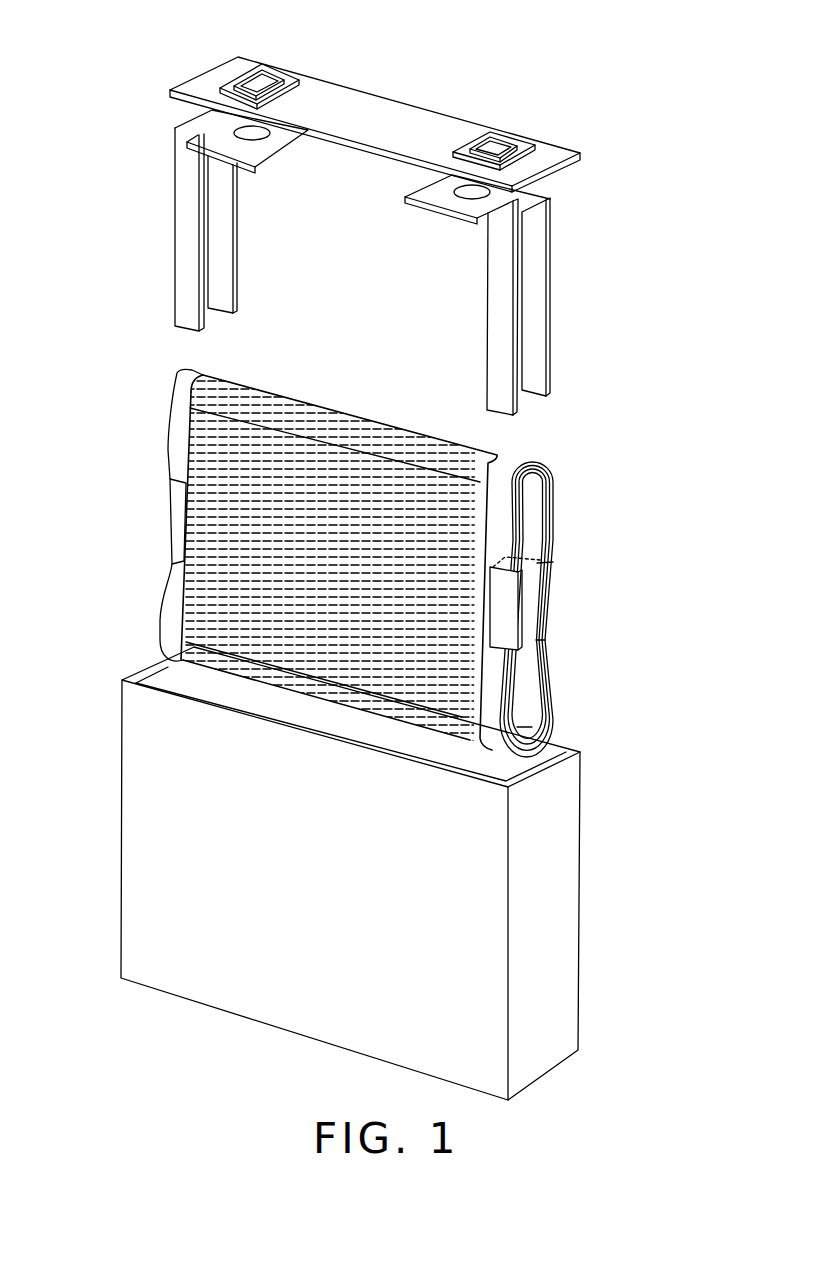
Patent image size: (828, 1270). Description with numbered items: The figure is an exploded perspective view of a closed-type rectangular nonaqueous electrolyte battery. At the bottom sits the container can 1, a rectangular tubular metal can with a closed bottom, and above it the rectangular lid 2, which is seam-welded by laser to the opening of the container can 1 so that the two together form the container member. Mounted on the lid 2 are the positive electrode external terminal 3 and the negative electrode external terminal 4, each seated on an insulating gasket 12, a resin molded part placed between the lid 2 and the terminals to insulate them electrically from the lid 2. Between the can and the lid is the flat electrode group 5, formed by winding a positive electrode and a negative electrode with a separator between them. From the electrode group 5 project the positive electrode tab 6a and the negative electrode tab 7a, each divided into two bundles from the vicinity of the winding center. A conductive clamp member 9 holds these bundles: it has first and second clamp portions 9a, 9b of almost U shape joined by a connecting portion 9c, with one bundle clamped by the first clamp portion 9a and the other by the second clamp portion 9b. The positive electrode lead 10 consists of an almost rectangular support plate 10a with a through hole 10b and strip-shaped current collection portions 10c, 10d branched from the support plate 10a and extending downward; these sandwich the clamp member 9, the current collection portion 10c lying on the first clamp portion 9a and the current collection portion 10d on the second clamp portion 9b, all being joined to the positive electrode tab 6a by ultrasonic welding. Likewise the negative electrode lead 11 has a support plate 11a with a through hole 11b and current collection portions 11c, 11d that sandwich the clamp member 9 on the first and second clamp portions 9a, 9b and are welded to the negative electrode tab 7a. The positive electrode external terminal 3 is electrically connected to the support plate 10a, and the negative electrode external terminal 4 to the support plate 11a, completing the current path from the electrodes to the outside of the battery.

The container can 1 is at (560, 912).
The lid 2 is at (383, 105).
The positive electrode external terminal 3 is at (262, 80).
The negative electrode external terminal 4 is at (497, 145).
The electrode group 5 is at (368, 406).
The positive electrode tab 6a is at (178, 428).
The negative electrode tab 7a is at (502, 511).
The conductive clamp member 9 is at (377, 564).
The first clamp portion 9a is at (503, 632).
The second clamp portion 9b is at (546, 598).
The connecting portion 9c is at (527, 565).
The positive electrode lead 10 is at (216, 220).
The support plate 10a is at (290, 134).
The through hole 10b is at (262, 137).
The current collection portion 10c is at (187, 280).
The current collection portion 10d is at (225, 275).
The negative electrode lead 11 is at (526, 295).
The support plate 11a is at (503, 200).
The through hole 11b is at (462, 194).
The current collection portion 11c is at (495, 330).
The current collection portion 11d is at (533, 327).
The insulating gasket 12 is at (287, 80).